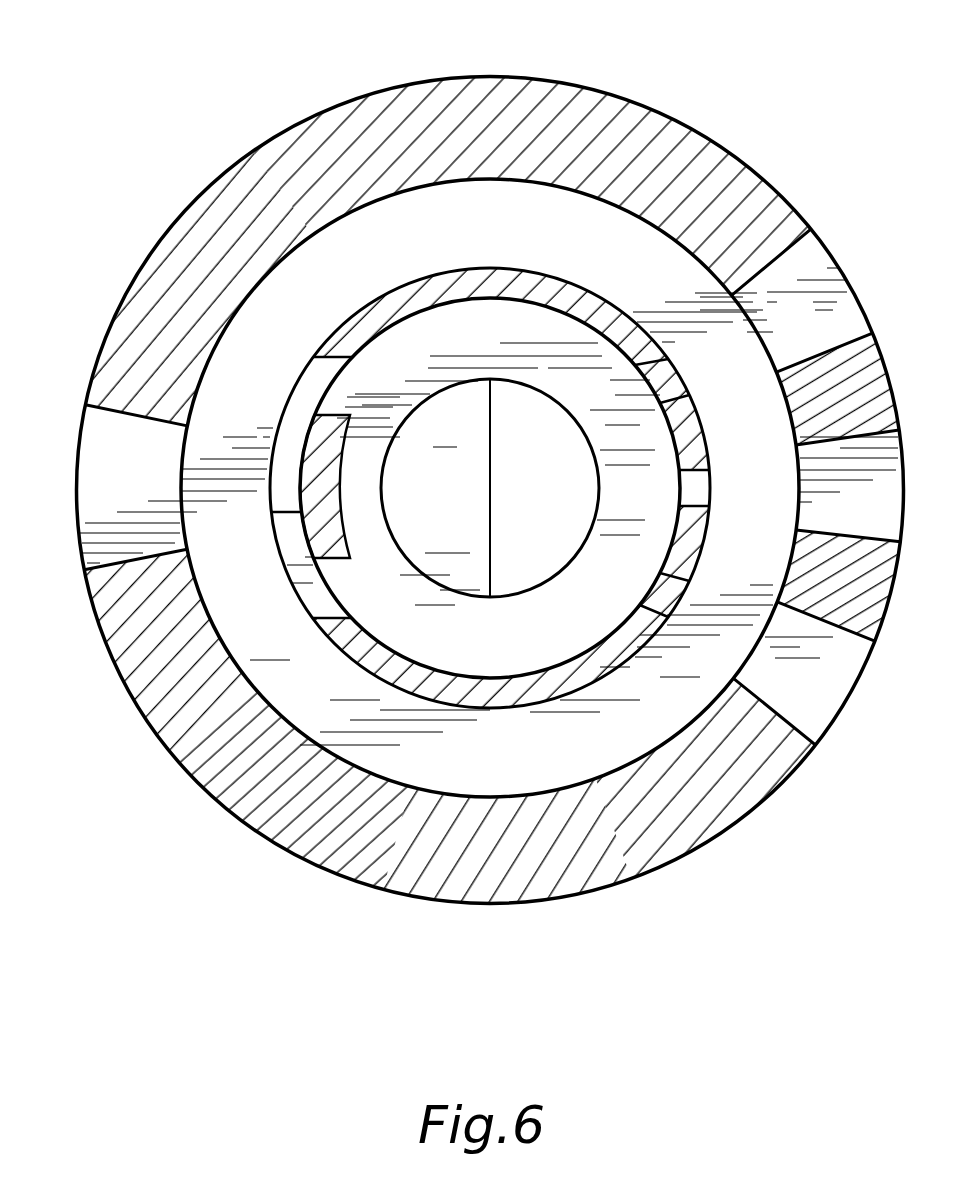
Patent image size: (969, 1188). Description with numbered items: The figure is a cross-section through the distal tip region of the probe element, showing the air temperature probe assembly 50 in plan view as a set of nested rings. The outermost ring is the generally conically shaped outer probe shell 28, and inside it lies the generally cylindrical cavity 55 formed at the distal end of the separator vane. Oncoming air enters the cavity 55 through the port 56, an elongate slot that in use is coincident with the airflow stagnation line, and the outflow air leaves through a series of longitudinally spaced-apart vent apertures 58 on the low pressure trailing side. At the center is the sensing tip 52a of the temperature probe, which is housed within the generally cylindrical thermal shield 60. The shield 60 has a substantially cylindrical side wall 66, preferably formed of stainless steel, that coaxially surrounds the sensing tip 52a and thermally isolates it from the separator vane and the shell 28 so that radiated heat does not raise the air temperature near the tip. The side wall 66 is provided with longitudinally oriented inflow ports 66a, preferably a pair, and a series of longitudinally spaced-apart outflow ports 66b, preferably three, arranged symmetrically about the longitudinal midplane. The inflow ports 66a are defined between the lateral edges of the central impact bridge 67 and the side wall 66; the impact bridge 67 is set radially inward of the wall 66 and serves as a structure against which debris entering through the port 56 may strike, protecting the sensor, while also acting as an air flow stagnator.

The outer probe shell 28 is at (645, 123).
The air temperature probe assembly 50 is at (463, 465).
The sensing tip portion 52a is at (555, 502).
The cylindrical cavity 55 is at (442, 231).
The port 56 is at (92, 456).
The vent apertures 58 is at (807, 322).
The thermal shield 60 is at (364, 303).
The side wall 66 is at (562, 262).
The inflow ports 66a is at (318, 397).
The outflow ports 66b is at (737, 373).
The impact bridge 67 is at (302, 508).